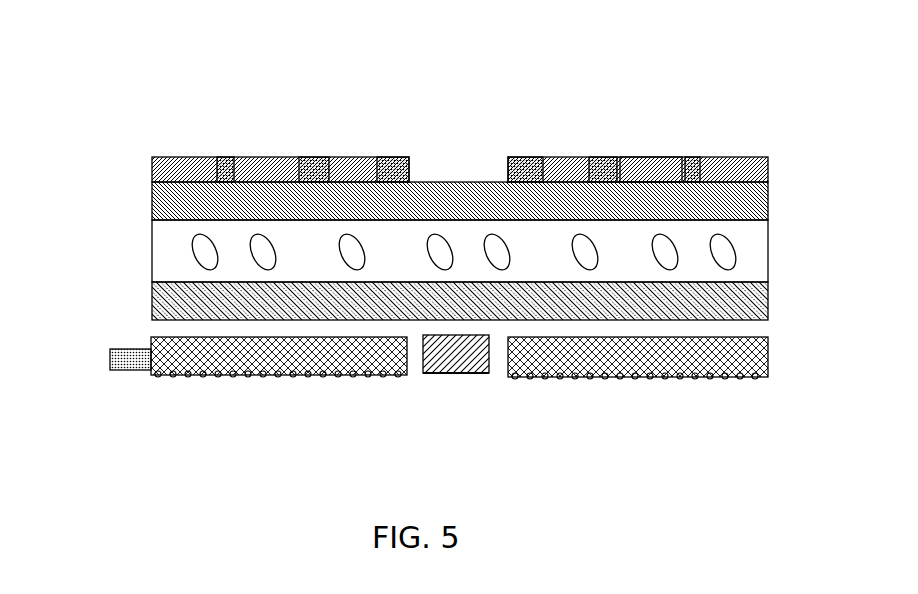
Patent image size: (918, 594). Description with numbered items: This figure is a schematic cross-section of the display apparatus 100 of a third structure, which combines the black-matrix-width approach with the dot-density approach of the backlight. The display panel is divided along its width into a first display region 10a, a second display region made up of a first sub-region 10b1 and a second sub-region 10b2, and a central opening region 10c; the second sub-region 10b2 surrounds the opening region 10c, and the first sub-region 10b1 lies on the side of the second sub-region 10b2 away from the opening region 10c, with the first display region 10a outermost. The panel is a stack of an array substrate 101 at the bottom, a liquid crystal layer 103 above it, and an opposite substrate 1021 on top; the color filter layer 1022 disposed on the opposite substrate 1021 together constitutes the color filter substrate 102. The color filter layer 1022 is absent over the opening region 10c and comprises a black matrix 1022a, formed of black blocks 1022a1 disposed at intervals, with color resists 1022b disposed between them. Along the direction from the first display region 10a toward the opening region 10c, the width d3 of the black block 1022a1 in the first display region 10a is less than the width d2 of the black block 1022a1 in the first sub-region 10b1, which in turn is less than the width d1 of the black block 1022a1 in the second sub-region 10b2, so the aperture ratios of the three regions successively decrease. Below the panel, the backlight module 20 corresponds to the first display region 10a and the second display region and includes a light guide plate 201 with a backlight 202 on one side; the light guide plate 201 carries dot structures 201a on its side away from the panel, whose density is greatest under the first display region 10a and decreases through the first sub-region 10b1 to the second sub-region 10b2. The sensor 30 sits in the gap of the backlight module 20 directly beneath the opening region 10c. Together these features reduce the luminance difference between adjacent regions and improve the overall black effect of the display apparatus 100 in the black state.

The display apparatus 100 is at (750, 47).
The color filter substrate 102 is at (858, 135).
The color filter layer 1022 is at (768, 163).
The black matrix 1022a is at (702, 157).
The black block 1022a1 is at (738, 152).
The color resist 1022b is at (657, 157).
The opposite substrate 1021 is at (768, 207).
The liquid crystal layer 103 is at (766, 253).
The array substrate 101 is at (766, 300).
The first display region 10a is at (244, 112).
The first sub-region 10b1 is at (329, 112).
The second sub-region 10b2 is at (413, 112).
The opening region 10c is at (508, 120).
The width of black block corresponding to second sub-region d1 is at (440, 142).
The width of black block corresponding to first sub-region d2 is at (377, 142).
The width of black block corresponding to first display region d3 is at (256, 142).
The backlight module 20 is at (208, 428).
The light guide plate 201 is at (226, 364).
The dot structure 201a is at (306, 373).
The backlight 202 is at (122, 372).
The sensor 30 is at (440, 372).